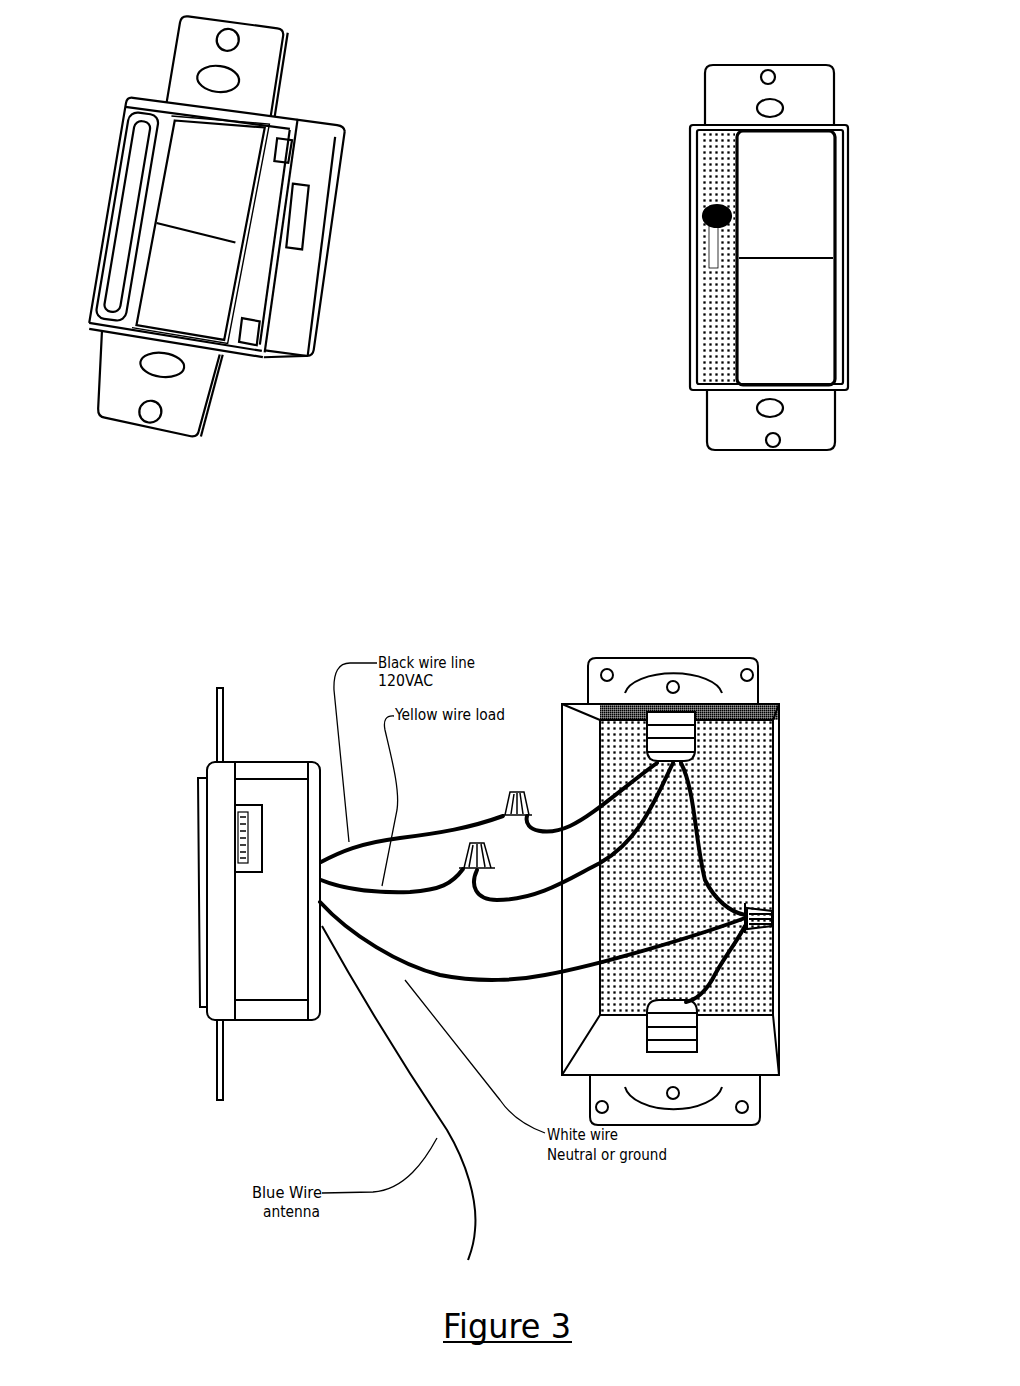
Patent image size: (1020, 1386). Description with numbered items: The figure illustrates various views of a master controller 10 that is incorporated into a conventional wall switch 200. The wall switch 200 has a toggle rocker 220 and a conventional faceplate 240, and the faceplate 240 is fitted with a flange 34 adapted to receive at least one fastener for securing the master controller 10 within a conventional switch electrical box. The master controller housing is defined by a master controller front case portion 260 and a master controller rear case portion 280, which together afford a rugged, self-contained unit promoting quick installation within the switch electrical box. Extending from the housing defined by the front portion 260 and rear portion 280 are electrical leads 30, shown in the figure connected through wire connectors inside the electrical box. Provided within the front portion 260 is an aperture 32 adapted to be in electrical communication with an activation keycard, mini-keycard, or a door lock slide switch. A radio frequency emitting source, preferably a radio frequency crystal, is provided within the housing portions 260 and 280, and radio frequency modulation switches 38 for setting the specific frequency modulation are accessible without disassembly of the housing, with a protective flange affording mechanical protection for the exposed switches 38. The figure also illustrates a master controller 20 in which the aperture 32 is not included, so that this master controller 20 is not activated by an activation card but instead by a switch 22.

The master controller 10 is at (233, 226).
The wall switch 200 is at (233, 229).
The flange 34 is at (205, 78).
The aperture 32 is at (101, 258).
The toggle rocker 220 is at (167, 298).
The radio frequency modulation switches 38 is at (312, 212).
The master controller rear case portion 280 is at (337, 244).
The faceplate 240 is at (231, 354).
The master controller front case portion 260 is at (303, 368).
The master controller 20 is at (727, 257).
The switch 22 is at (701, 219).
The electrical leads 30 is at (438, 822).